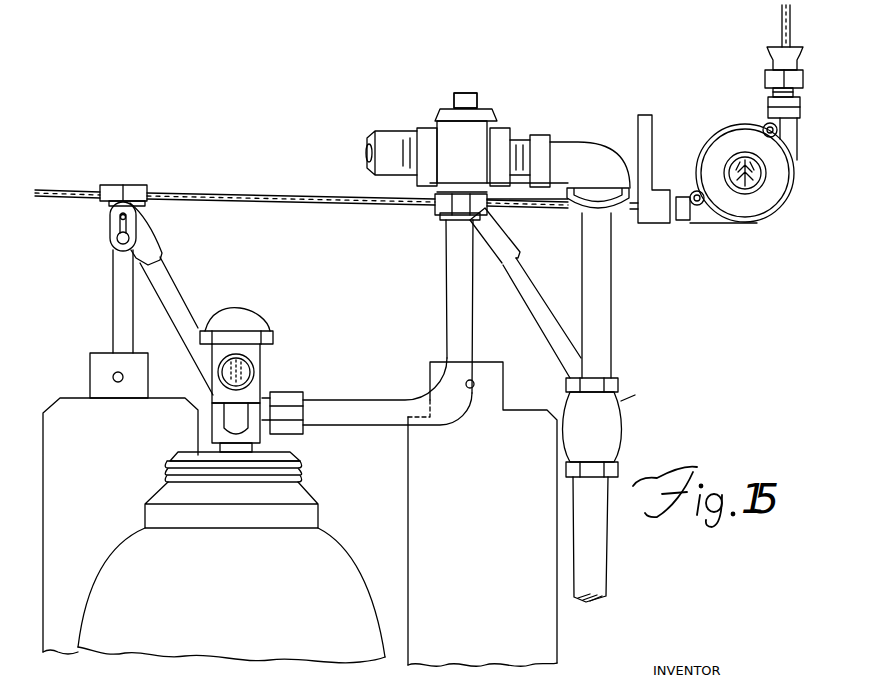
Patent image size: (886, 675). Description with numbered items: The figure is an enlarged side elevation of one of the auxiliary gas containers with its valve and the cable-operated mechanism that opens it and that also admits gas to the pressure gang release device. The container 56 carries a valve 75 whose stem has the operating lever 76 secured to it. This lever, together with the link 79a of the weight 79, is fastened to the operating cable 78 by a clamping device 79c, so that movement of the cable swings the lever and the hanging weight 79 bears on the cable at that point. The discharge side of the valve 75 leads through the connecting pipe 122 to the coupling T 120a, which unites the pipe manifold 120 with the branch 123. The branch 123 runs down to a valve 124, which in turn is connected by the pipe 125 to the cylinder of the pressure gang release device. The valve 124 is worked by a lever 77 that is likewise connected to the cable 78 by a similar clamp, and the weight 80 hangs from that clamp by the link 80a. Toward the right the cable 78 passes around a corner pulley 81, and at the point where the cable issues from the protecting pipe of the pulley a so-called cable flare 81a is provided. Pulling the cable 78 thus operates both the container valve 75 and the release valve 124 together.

The auxiliary group of containers 56 is at (231, 557).
The valve 75 is at (262, 359).
The operating lever 76 is at (188, 312).
The lever 77 is at (525, 278).
The operating cable 78 is at (251, 201).
The weight 79 is at (120, 526).
The link 79a is at (114, 316).
The clamping device 79c is at (131, 186).
The weight 80 is at (482, 558).
The link 80a is at (473, 331).
The corner pulley 81 is at (756, 213).
The cable flare 81a is at (772, 60).
The pipe manifold 120 is at (396, 137).
The coupling T 120a is at (492, 117).
The connecting pipe 122 is at (369, 399).
The branch 123 is at (608, 288).
The valve 124 is at (620, 425).
The pipe 125 is at (603, 577).